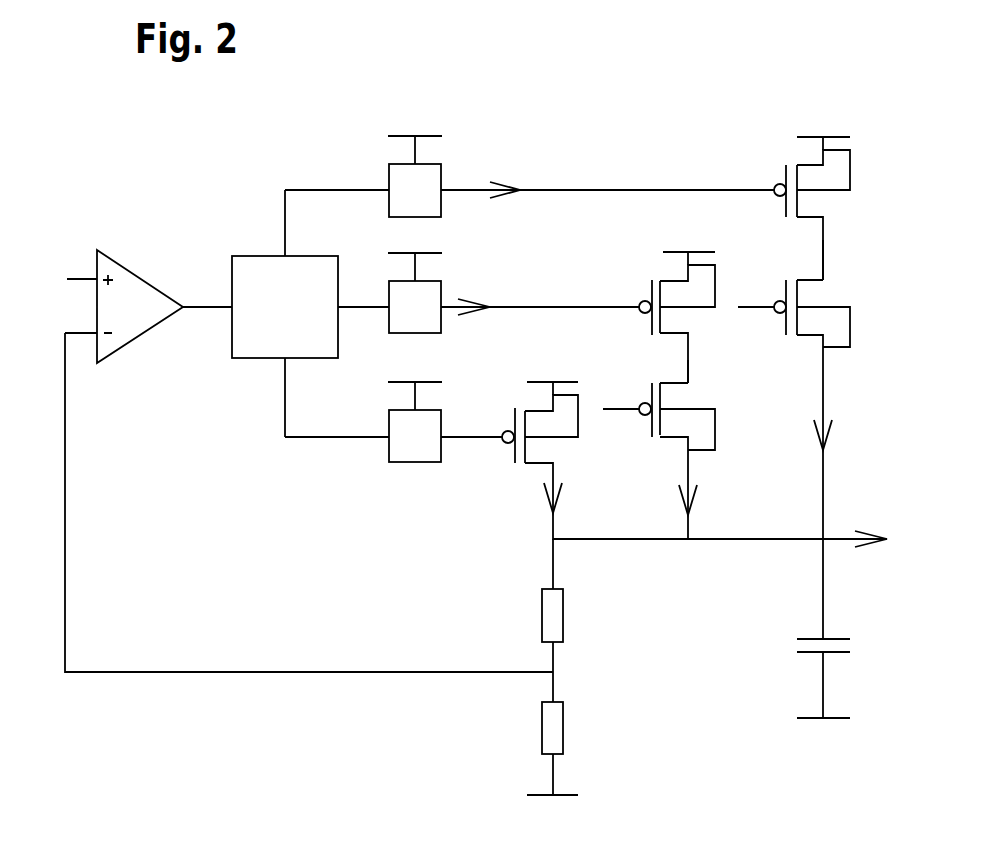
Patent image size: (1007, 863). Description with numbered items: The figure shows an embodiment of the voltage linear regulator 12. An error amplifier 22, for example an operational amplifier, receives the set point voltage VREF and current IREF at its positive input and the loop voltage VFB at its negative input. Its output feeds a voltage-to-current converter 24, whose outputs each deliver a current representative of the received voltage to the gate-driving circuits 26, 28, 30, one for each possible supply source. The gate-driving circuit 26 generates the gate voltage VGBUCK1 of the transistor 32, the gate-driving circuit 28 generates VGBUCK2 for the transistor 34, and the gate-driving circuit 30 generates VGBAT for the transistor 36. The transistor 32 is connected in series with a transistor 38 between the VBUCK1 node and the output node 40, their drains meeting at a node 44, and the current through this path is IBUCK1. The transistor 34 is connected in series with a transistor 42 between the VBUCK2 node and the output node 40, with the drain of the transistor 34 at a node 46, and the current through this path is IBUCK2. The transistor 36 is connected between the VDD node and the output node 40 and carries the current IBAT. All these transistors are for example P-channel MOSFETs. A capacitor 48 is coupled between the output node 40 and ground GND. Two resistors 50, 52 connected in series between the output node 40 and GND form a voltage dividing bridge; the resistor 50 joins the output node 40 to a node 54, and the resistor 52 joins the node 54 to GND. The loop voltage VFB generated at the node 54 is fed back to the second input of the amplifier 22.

The voltage linear regulator 12 is at (882, 177).
The error amplifier 22 is at (135, 302).
The voltage-to-current converter 24 is at (257, 268).
The gate-driving circuit 26 is at (400, 178).
The gate-driving circuit 28 is at (405, 290).
The gate-driving circuit 30 is at (413, 445).
The transistor 32 is at (780, 175).
The transistor 34 is at (645, 290).
The transistor 36 is at (510, 455).
The transistor 38 is at (778, 322).
The output node 40 is at (820, 537).
The transistor 42 is at (645, 393).
The node 44 is at (828, 258).
The node 46 is at (692, 365).
The capacitor 48 is at (810, 637).
The resistor 50 is at (553, 608).
The resistor 52 is at (555, 720).
The node 54 is at (556, 670).